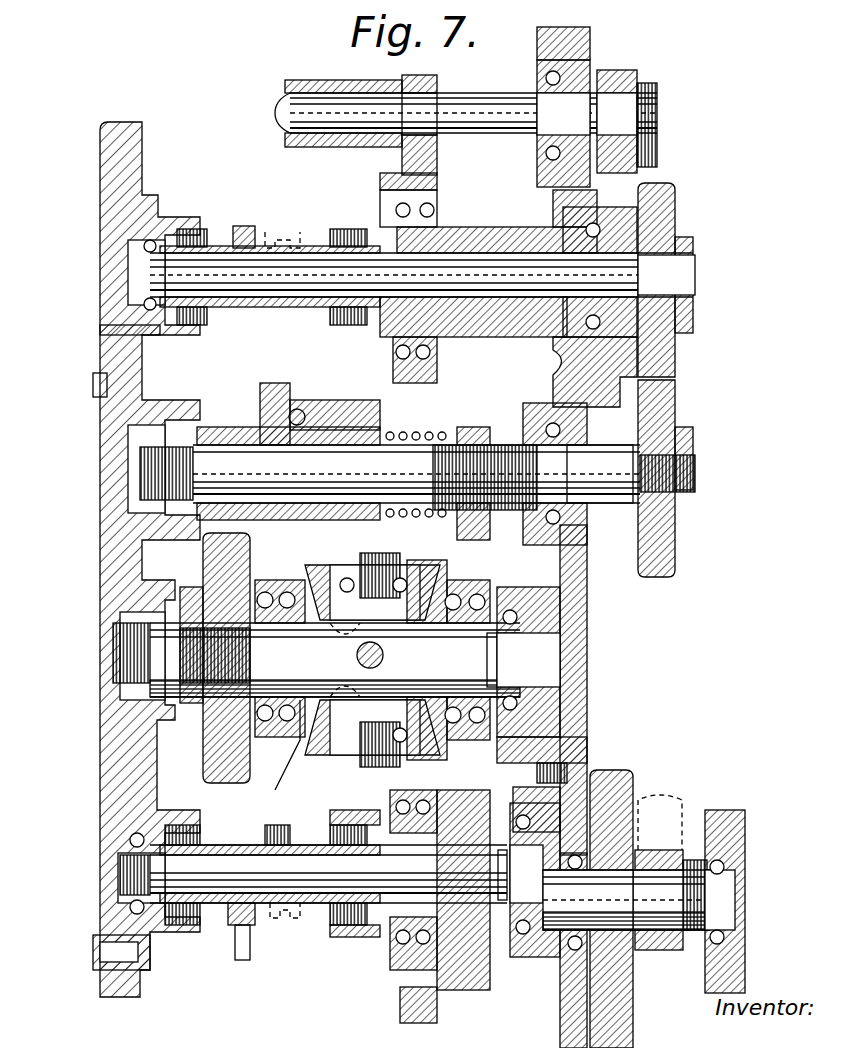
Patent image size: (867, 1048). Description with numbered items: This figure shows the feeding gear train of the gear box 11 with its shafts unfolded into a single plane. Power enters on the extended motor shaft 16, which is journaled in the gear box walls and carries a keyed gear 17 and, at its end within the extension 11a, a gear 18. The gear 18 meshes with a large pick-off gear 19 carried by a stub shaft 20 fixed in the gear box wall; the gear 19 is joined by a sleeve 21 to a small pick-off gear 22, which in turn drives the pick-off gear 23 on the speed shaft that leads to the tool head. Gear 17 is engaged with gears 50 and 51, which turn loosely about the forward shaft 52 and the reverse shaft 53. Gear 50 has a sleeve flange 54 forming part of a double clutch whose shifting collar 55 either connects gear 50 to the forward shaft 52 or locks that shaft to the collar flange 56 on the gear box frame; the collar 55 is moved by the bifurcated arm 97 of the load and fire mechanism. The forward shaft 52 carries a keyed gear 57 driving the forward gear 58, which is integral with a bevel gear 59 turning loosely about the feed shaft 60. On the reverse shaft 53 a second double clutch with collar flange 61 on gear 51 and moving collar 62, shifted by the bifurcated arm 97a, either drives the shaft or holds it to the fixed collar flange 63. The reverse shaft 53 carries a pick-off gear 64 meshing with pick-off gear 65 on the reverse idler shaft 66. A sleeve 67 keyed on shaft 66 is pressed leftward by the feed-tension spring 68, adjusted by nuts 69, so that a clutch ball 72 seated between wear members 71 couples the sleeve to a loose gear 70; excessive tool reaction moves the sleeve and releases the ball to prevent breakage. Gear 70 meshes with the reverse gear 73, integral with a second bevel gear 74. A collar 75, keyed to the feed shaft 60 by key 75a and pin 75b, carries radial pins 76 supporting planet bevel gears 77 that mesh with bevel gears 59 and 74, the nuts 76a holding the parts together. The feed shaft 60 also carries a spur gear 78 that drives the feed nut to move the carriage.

The gear box 11 is at (100, 756).
The extension of the gear box 11a is at (745, 828).
The extended motor shaft 16 is at (330, 105).
The gear 17 is at (408, 152).
The gear 18 is at (600, 78).
The large pick-off gear 19 is at (633, 992).
The stub shaft 20 is at (626, 900).
The sleeve 21 is at (665, 940).
The small pick-off gear 22 is at (670, 850).
The pick-off gear 23 is at (685, 805).
The gear 50 is at (400, 1000).
The gear 51 is at (432, 190).
The forward shaft 52 is at (220, 905).
The reverse shaft 53 is at (468, 252).
The sleeve flange 54 is at (350, 930).
The shifting collar 55 is at (255, 915).
The collar flange 56 is at (180, 925).
The gear 57 is at (478, 975).
The forward gear 58 is at (490, 578).
The bevel gear 59 is at (425, 575).
The feed shaft 60 is at (316, 660).
The collar flange 61 is at (345, 228).
The moving collar 62 is at (268, 232).
The collar flange 63 is at (175, 220).
The pick-off gear 64 is at (656, 215).
The pick-off gear 65 is at (660, 427).
The reverse idler shaft 66 is at (236, 458).
The sleeve 67 is at (345, 440).
The feed-tension spring 68 is at (420, 432).
The nuts 69 is at (473, 430).
The loose gear 70 is at (262, 402).
The wear members 71 is at (300, 410).
The feed-tension clutch ball 72 is at (322, 415).
The reverse gear 73 is at (293, 755).
The bevel gear 74 is at (345, 578).
The collar 75 is at (368, 700).
The key 75a is at (335, 628).
The pin 75b is at (352, 655).
The pins 76 is at (375, 575).
The nuts 76a is at (365, 560).
The bevel gears 77 is at (403, 578).
The spur gear 78 is at (215, 750).
The bifurcated arm 97 is at (239, 946).
The bifurcated arm 97a is at (240, 225).